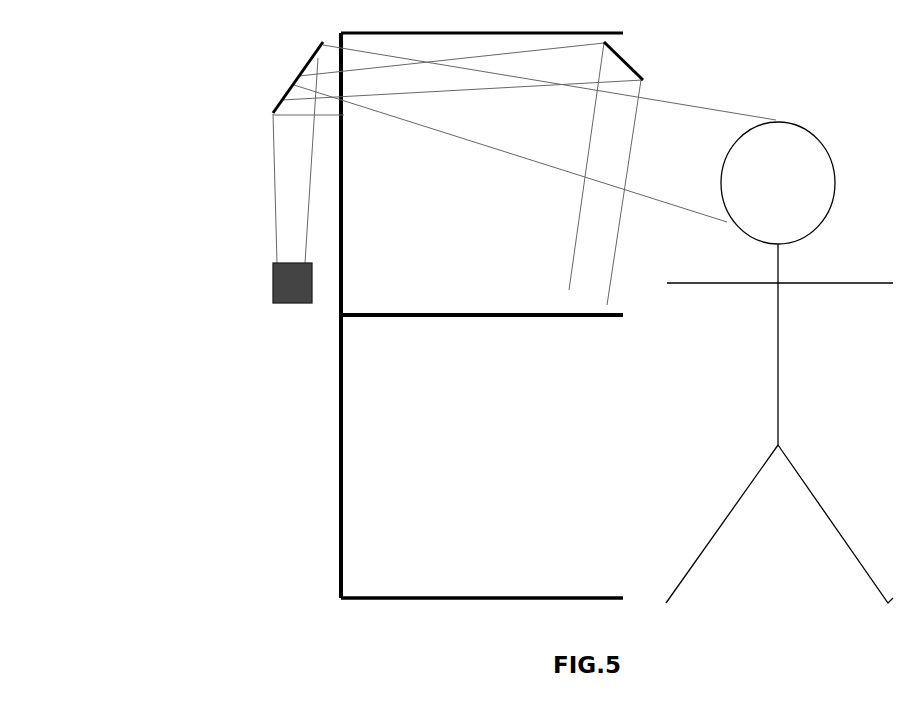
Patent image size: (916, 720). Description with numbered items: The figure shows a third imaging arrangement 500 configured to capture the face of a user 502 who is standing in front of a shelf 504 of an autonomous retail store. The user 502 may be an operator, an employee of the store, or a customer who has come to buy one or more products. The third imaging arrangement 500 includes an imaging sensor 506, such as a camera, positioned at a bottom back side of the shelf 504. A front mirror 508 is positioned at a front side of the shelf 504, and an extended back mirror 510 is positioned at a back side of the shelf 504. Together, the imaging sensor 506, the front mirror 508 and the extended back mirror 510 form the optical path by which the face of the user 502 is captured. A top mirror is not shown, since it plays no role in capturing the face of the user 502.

The third imaging arrangement 500 is at (88, 482).
The user 502 is at (838, 166).
The shelf 504 is at (380, 313).
The imaging sensor 506 is at (272, 298).
The front mirror 508 is at (631, 64).
The extended back mirror 510 is at (278, 107).